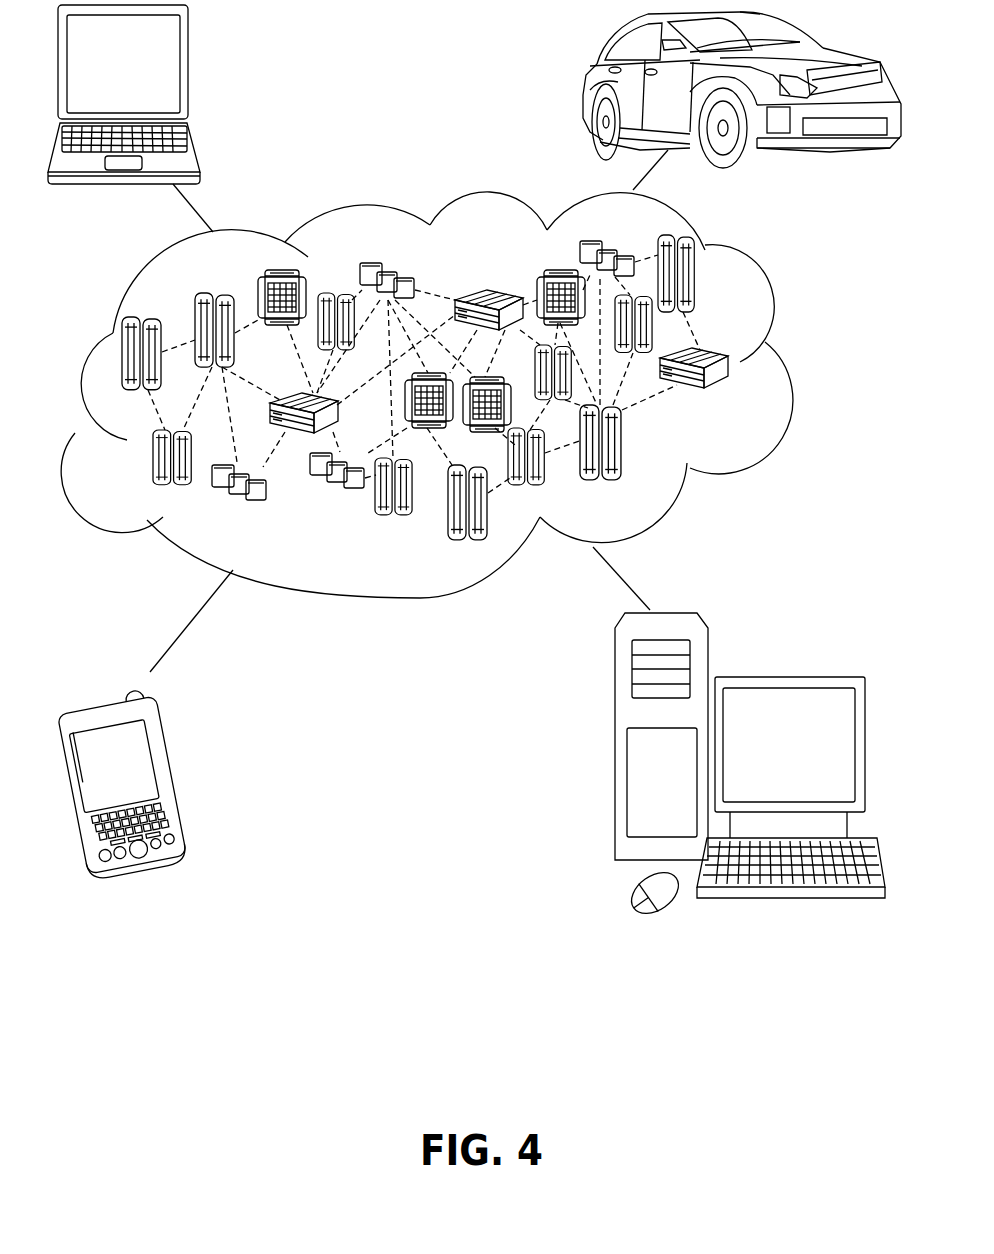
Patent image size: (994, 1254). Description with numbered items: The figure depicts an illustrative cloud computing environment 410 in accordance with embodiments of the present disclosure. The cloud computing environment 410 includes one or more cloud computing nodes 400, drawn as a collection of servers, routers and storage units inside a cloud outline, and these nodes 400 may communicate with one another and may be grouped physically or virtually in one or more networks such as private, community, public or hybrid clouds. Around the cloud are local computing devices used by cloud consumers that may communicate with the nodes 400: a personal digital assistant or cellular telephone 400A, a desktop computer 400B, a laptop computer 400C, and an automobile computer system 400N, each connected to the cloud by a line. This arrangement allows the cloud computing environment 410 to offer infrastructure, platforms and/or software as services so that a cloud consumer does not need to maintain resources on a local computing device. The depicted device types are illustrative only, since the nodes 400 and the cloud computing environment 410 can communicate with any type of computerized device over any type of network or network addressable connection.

The cloud computing nodes 400 is at (458, 395).
The cloud computing environment 410 is at (788, 363).
The personal digital assistant (PDA) or cellular telephone 400A is at (177, 777).
The desktop computer 400B is at (787, 677).
The laptop computer 400C is at (190, 74).
The automobile computer system 400N is at (583, 88).